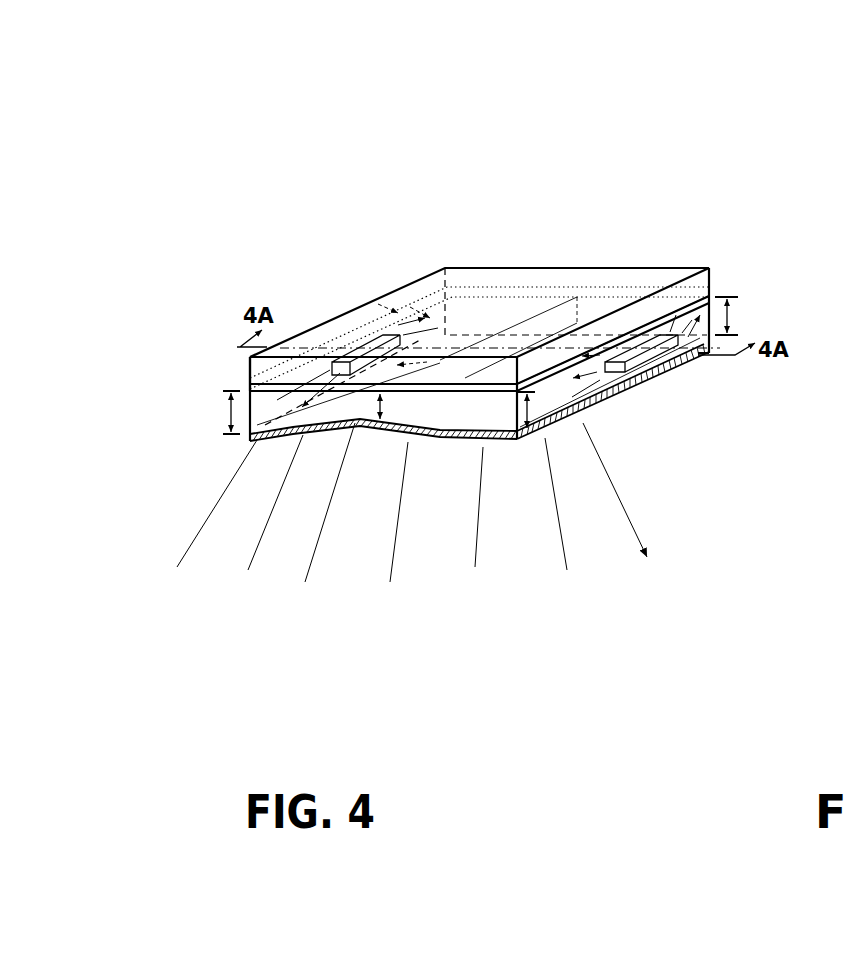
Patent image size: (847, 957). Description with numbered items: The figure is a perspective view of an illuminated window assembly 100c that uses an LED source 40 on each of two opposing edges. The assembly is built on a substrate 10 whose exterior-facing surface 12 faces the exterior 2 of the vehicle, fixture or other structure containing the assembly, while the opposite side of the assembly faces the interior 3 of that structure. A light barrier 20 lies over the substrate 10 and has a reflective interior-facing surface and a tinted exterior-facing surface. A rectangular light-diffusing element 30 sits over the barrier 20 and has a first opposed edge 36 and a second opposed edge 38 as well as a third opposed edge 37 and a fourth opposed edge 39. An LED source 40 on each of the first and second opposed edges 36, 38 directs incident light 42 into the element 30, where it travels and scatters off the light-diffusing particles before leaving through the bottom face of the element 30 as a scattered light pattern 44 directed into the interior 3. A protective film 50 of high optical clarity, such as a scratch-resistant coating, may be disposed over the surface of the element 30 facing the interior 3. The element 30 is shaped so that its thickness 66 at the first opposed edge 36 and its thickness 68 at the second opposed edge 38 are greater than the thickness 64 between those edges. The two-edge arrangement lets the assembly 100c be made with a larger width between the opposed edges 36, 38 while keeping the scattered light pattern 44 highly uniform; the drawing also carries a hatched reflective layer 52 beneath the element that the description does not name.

The illuminated window assembly 100c is at (736, 150).
The exterior 2 is at (496, 178).
The interior 3 is at (311, 515).
The substrate 10 is at (700, 283).
The exterior-facing surface 12 is at (545, 263).
The light barrier 20 is at (250, 382).
The light-diffusing element 30 is at (713, 299).
The first opposed edge 36 is at (582, 424).
The third opposed edge 37 is at (483, 416).
The second opposed edge 38 is at (382, 304).
The fourth opposed edge 39 is at (612, 298).
The LED source 40 is at (376, 345).
The incident light 42 is at (420, 335).
The scattered light pattern 44 is at (632, 517).
The protective film 50 is at (668, 369).
The reflective sheet 52 is at (265, 448).
The thickness between the opposed edges 64 is at (380, 408).
The thickness at the first opposed edge 66 is at (736, 315).
The thickness at the second opposed edge 68 is at (231, 412).